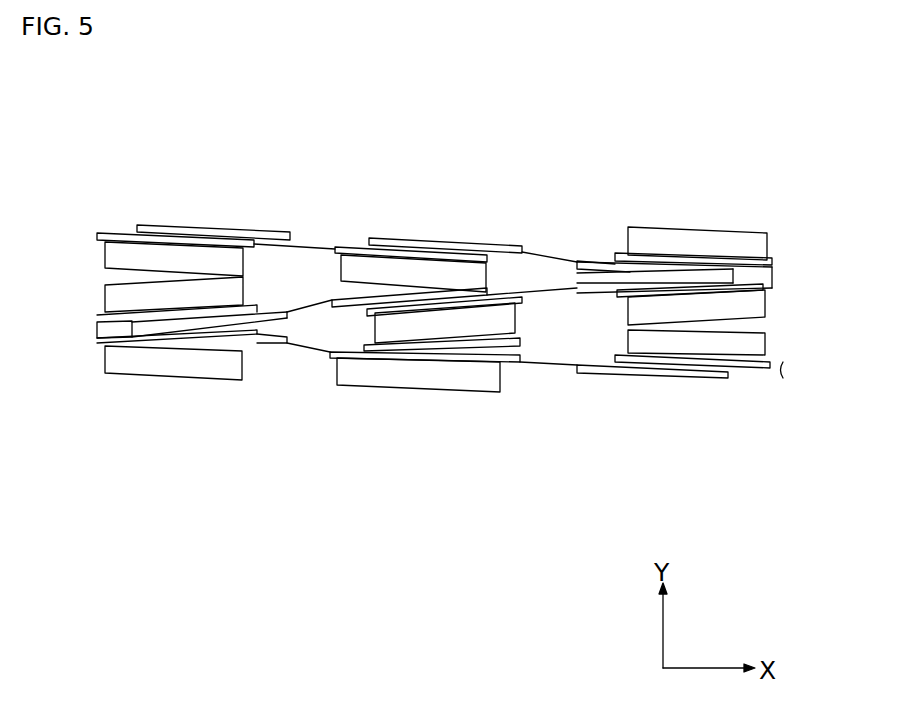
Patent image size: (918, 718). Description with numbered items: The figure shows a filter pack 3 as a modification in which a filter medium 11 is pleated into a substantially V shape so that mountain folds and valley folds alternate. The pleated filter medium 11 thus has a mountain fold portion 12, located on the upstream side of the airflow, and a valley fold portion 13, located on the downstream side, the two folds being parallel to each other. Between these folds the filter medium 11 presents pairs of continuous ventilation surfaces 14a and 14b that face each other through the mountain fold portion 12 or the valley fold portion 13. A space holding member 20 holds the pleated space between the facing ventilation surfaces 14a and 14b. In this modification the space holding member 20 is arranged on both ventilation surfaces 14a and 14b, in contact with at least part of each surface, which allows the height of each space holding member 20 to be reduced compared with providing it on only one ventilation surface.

The filter pack 3 is at (235, 222).
The filter medium 11 is at (82, 237).
The mountain fold portion 12 is at (97, 330).
The valley fold portion 13 is at (773, 273).
The ventilation surface 14a is at (318, 246).
The ventilation surface 14b is at (546, 292).
The space holding member 20 is at (773, 362).